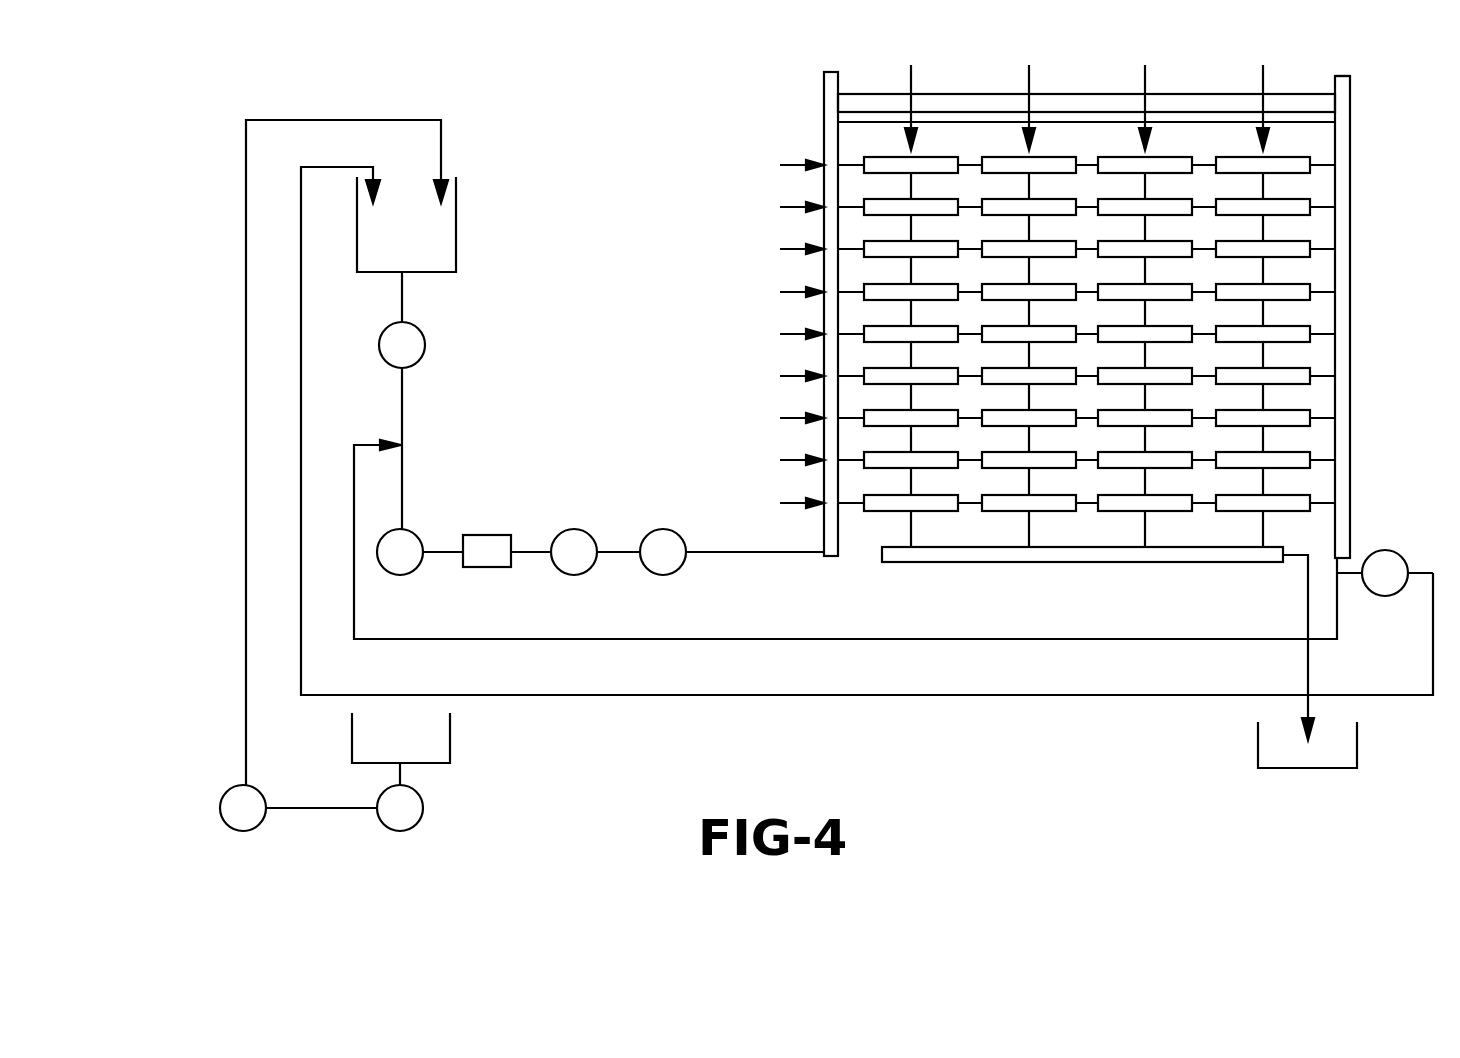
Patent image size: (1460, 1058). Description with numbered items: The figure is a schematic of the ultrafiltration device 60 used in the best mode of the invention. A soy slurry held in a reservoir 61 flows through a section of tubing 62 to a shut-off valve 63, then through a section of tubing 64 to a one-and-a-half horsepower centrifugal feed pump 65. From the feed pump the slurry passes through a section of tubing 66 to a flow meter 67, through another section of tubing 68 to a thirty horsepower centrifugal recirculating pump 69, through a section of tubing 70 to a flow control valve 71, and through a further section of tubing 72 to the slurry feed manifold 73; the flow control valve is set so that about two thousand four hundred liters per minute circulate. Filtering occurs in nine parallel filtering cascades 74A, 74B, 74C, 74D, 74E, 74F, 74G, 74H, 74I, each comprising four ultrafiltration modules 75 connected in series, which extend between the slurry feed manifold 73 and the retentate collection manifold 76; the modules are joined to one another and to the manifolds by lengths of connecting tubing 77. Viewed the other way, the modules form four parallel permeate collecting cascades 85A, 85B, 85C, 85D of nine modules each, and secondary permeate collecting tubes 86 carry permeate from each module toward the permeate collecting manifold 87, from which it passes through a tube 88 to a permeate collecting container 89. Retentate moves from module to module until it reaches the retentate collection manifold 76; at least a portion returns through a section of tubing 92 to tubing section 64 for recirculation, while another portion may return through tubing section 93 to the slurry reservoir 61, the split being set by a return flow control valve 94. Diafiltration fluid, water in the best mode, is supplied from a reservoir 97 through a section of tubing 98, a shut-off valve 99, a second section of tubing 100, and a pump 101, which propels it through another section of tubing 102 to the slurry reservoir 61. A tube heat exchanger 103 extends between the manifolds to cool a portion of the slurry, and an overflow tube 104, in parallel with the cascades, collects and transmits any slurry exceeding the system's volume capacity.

The ultrafiltration device 60 is at (626, 149).
The reservoir 61 is at (456, 212).
The section of tubing 62 is at (402, 295).
The shut-off valve 63 is at (424, 352).
The section of tubing 64 is at (402, 403).
The centrifugal feed pump 65 is at (412, 532).
The section of tubing 66 is at (443, 552).
The flow meter 67 is at (483, 535).
The section of tubing 68 is at (530, 552).
The centrifugal recirculating pump 69 is at (575, 529).
The section of tubing 70 is at (617, 552).
The flow control valve 71 is at (663, 529).
The section of tubing 72 is at (763, 553).
The slurry feed manifold 73 is at (832, 135).
The filtering cascade 74A is at (797, 165).
The filtering cascade 74B is at (797, 207).
The filtering cascade 74C is at (797, 249).
The filtering cascade 74D is at (796, 292).
The filtering cascade 74E is at (798, 334).
The filtering cascade 74F is at (798, 376).
The filtering cascade 74G is at (796, 418).
The filtering cascade 74H is at (796, 460).
The filtering cascade 74I is at (801, 503).
The ultrafiltration module 75 is at (900, 503).
The retentate collection manifold 76 is at (1350, 335).
The connecting tubing 77 is at (843, 505).
The permeate collecting cascade 85A is at (912, 294).
The permeate collecting cascade 85B is at (1029, 294).
The permeate collecting cascade 85C is at (1145, 294).
The permeate collecting cascade 85D is at (1264, 294).
The secondary permeate collecting tube 86 is at (911, 174).
The permeate collecting manifold 87 is at (1057, 557).
The tube 88 is at (1306, 603).
The permeate collecting container 89 is at (1357, 740).
The section of tubing 92 is at (355, 467).
The tubing section 93 is at (303, 290).
The return flow control valve 94 is at (1385, 550).
The reservoir 97 is at (450, 735).
The section of tubing 98 is at (400, 775).
The shut-off valve 99 is at (424, 812).
The second section of tubing 100 is at (318, 808).
The pump 101 is at (238, 832).
The section of tubing 102 is at (244, 640).
The tube heat exchanger 103 is at (938, 112).
The overflow tube 104 is at (1302, 93).